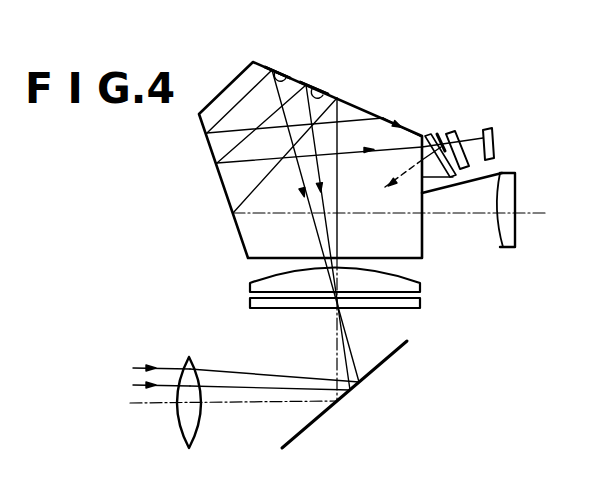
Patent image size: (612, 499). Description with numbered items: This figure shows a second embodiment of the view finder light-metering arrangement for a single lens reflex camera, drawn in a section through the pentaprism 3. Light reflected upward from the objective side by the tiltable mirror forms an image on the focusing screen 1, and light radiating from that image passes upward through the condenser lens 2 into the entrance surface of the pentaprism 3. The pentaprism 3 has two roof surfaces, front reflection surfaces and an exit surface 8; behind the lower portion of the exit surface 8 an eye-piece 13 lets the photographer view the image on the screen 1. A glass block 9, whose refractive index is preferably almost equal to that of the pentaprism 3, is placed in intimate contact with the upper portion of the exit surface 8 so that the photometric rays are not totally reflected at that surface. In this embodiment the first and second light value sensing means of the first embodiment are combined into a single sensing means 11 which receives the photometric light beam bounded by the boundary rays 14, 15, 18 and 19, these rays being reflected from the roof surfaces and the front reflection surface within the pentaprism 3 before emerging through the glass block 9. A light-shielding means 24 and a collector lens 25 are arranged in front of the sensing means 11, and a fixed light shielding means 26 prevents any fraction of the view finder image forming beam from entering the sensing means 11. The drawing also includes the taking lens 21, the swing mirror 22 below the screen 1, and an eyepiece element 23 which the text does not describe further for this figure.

The focusing screen 1 is at (260, 305).
The condenser lens 2 is at (250, 287).
The pentaprism 3 is at (353, 113).
The exit surface 8 is at (422, 250).
The glass block 9 is at (425, 136).
The light value sensing means 11 is at (494, 136).
The eye-piece 13 is at (515, 244).
The boundary ray of light 14 is at (320, 88).
The boundary ray of light 15 is at (314, 88).
The boundary ray of light 18 is at (281, 69).
The boundary ray of light 19 is at (277, 72).
The objective lens 21 is at (186, 428).
The swing mirror 22 is at (307, 428).
The reflection surface 23 is at (441, 174).
The light-shielding means 24 is at (439, 135).
The collector lens 25 is at (456, 134).
The fixed light shielding means 26 is at (478, 178).